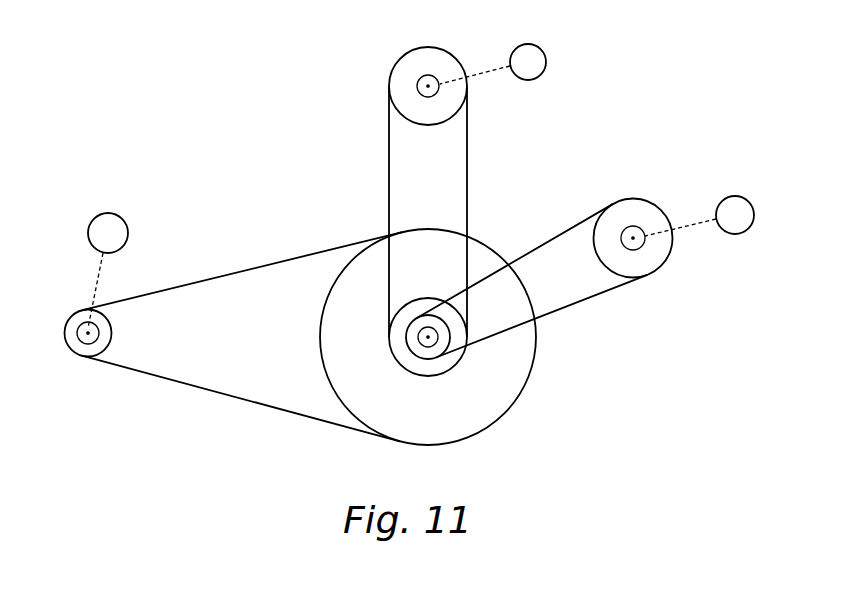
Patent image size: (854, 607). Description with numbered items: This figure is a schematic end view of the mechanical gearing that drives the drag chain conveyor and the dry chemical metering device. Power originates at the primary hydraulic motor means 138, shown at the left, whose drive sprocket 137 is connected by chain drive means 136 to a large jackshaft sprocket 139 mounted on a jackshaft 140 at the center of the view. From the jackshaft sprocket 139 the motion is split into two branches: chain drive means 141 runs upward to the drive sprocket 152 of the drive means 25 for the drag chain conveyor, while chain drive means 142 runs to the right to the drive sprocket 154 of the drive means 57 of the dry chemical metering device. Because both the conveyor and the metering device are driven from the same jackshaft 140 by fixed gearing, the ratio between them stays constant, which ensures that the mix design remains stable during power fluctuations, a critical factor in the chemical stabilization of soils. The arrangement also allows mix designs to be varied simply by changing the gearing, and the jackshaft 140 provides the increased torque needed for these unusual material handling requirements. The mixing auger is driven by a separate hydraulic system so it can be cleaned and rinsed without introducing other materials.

The drive means 25 is at (550, 58).
The drive means 57 is at (735, 196).
The chain drive means 136 is at (200, 390).
The drive sprocket 137 is at (70, 340).
The primary hydraulic motor means 138 is at (104, 213).
The jackshaft sprocket 139 is at (470, 410).
The jackshaft 140 is at (430, 337).
The chain drive means 141 is at (468, 165).
The chain drive means 142 is at (593, 298).
The drive sprocket 152 is at (425, 52).
The drive sprocket 154 is at (651, 257).